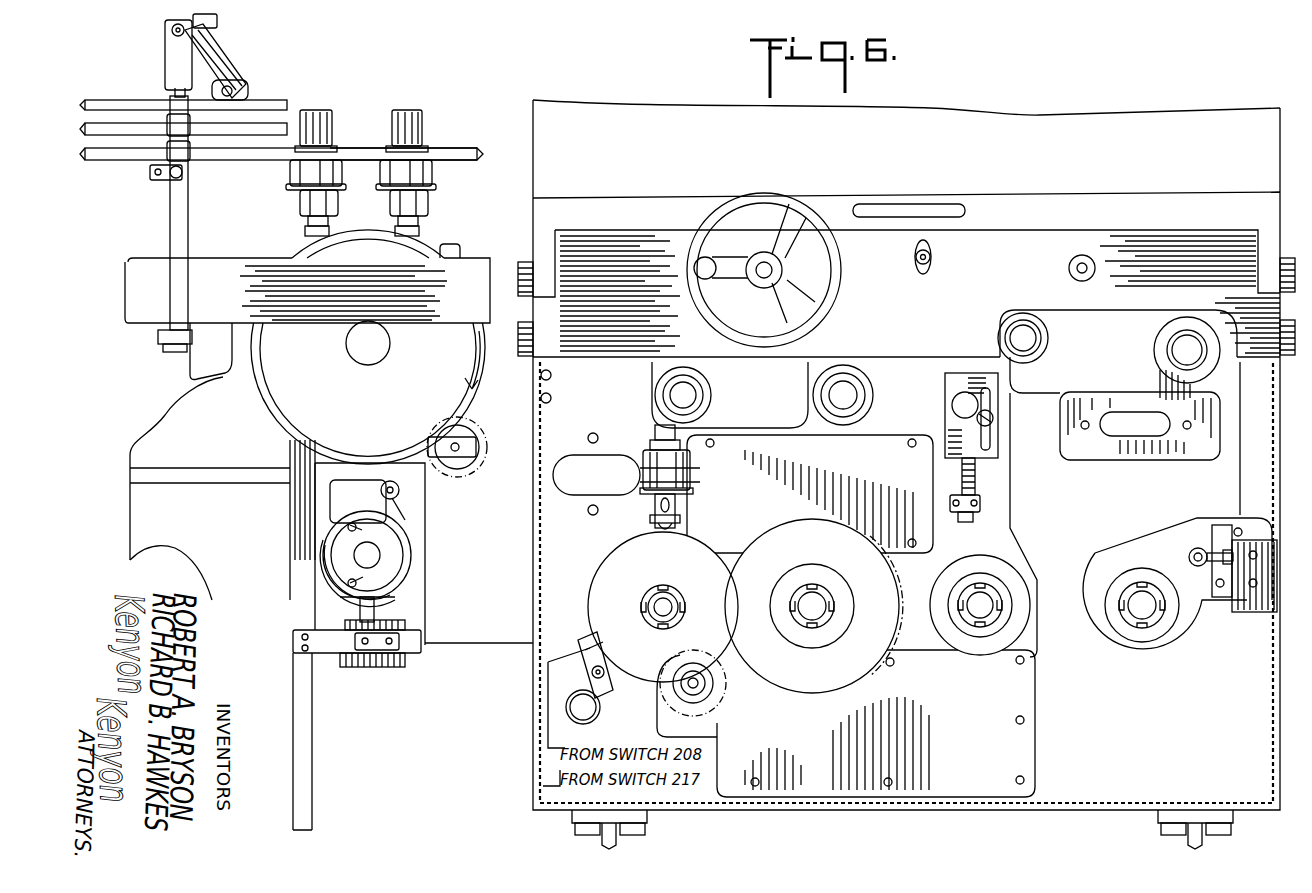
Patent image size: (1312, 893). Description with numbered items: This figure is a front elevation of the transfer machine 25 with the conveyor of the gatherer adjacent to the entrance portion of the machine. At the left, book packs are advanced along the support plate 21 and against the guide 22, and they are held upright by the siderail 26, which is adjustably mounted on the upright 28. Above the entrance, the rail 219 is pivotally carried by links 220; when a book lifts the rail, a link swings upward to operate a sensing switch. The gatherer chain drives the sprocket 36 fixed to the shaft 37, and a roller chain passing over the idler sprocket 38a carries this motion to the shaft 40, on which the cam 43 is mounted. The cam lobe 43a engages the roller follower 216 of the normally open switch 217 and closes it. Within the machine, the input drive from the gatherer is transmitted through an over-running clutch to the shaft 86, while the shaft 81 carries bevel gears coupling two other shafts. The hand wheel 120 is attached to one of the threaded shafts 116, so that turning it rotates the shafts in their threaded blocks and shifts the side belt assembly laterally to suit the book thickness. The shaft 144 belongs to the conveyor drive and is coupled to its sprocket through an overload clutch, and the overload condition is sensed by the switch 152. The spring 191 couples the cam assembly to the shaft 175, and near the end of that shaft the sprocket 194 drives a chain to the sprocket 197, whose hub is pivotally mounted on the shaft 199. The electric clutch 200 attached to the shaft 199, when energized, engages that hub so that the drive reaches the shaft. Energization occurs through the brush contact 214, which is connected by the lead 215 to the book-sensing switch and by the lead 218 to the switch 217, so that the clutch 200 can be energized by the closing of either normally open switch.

The support plate 21 is at (132, 312).
The guide 22 is at (141, 268).
The transfer machine 25 is at (502, 722).
The siderail 26 is at (346, 150).
The upright 28 is at (170, 197).
The sprocket 36 is at (258, 386).
The shaft 37 is at (361, 353).
The idler sprocket 38a is at (486, 465).
The shaft 40 is at (383, 550).
The cam 43 is at (398, 556).
The lobe 43a is at (408, 589).
The shaft 81 is at (845, 402).
The shaft 86 is at (664, 393).
The threaded shaft 116 is at (762, 271).
The hand wheel 120 is at (826, 302).
The shaft 144 is at (1133, 610).
The switch 152 is at (1240, 592).
The shaft 175 is at (815, 600).
The spring 191 is at (975, 598).
The sprocket 194 is at (850, 673).
The sprocket 197 is at (715, 700).
The shaft 199 is at (662, 613).
The electric clutch 200 is at (600, 583).
The brush contact 214 is at (593, 646).
The lead 215 is at (542, 684).
The roller follower 216 is at (330, 593).
The switch 217 is at (406, 622).
The lead 218 is at (543, 789).
The rail 219 is at (268, 103).
The link 220 is at (218, 56).